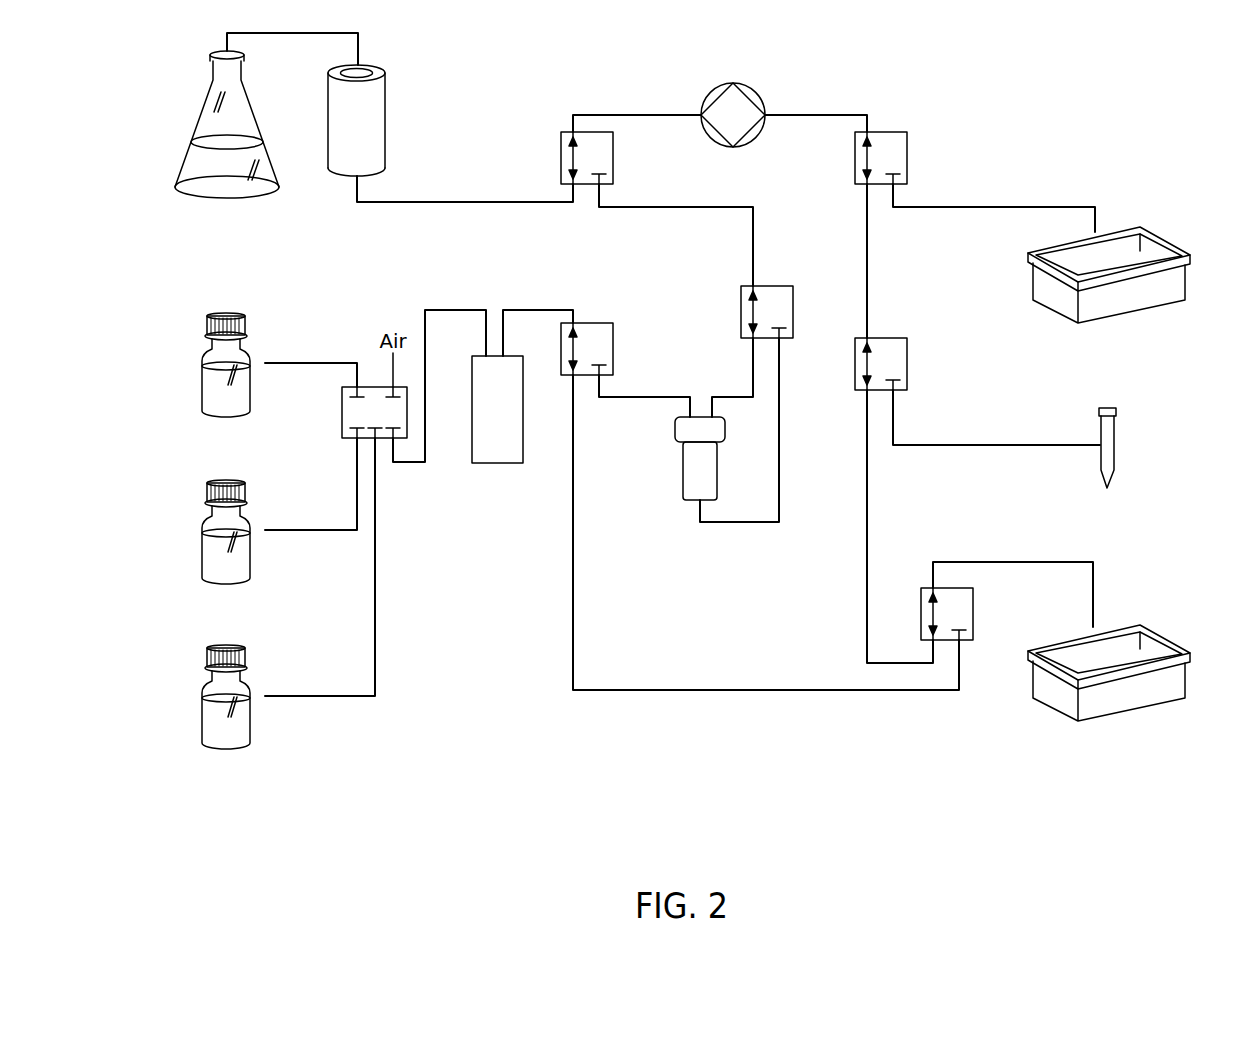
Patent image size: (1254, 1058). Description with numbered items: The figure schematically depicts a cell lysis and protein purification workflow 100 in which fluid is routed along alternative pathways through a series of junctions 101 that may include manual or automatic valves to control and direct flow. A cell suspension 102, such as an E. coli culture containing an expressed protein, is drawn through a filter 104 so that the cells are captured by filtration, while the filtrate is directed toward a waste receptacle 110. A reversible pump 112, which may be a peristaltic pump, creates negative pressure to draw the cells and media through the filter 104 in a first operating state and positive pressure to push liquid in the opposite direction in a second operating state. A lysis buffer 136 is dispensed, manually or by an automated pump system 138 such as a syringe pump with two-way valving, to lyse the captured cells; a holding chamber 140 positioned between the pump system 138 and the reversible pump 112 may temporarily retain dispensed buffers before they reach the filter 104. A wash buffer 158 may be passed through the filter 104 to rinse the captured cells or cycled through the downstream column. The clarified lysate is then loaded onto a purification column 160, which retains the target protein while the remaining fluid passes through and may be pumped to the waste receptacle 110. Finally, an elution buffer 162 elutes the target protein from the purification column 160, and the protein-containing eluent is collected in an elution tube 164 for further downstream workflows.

The cell lysis workflow 100 is at (253, 815).
The junction 101 is at (614, 160).
The cell suspension 102 is at (198, 117).
The filter 104 is at (387, 108).
The waste receptacle 110 is at (1155, 237).
The reversible pump 112 is at (763, 100).
The lysis buffer 136 is at (202, 386).
The pump system 138 is at (500, 466).
The holding chamber 140 is at (1153, 635).
The wash buffer 158 is at (202, 553).
The purification column 160 is at (683, 475).
The elution buffer 162 is at (202, 716).
The elution tube 164 is at (1117, 446).